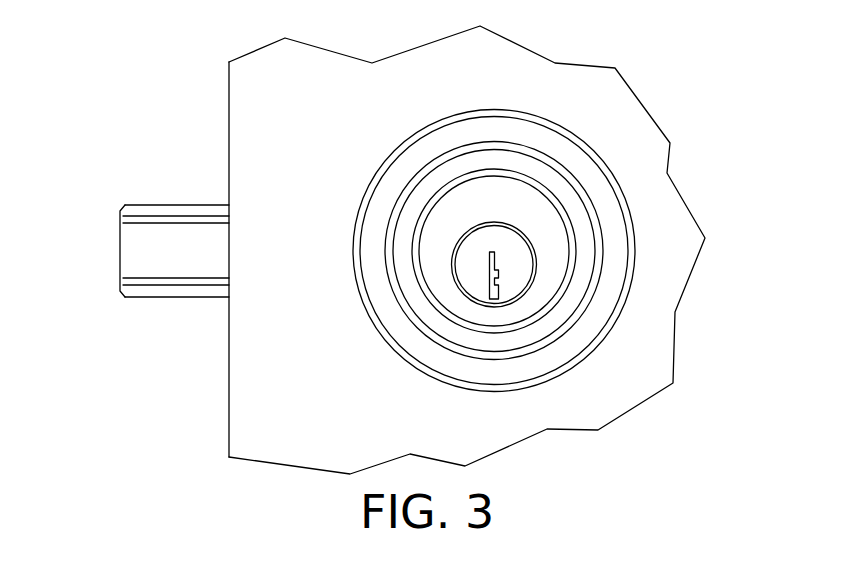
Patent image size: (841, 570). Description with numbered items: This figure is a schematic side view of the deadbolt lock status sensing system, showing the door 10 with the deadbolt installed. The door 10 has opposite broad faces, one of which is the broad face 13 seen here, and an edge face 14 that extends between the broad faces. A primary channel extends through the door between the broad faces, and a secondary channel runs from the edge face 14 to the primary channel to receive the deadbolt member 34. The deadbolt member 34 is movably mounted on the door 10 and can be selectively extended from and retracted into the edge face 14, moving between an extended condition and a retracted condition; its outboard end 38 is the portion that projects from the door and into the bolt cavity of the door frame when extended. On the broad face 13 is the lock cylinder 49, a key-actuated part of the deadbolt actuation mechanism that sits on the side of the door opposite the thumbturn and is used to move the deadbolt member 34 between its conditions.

The door 10 is at (307, 435).
The broad face 13 is at (372, 83).
The edge face 14 is at (229, 415).
The deadbolt member 34 is at (168, 260).
The outboard end 38 is at (120, 260).
The lock cylinder 49 is at (532, 245).